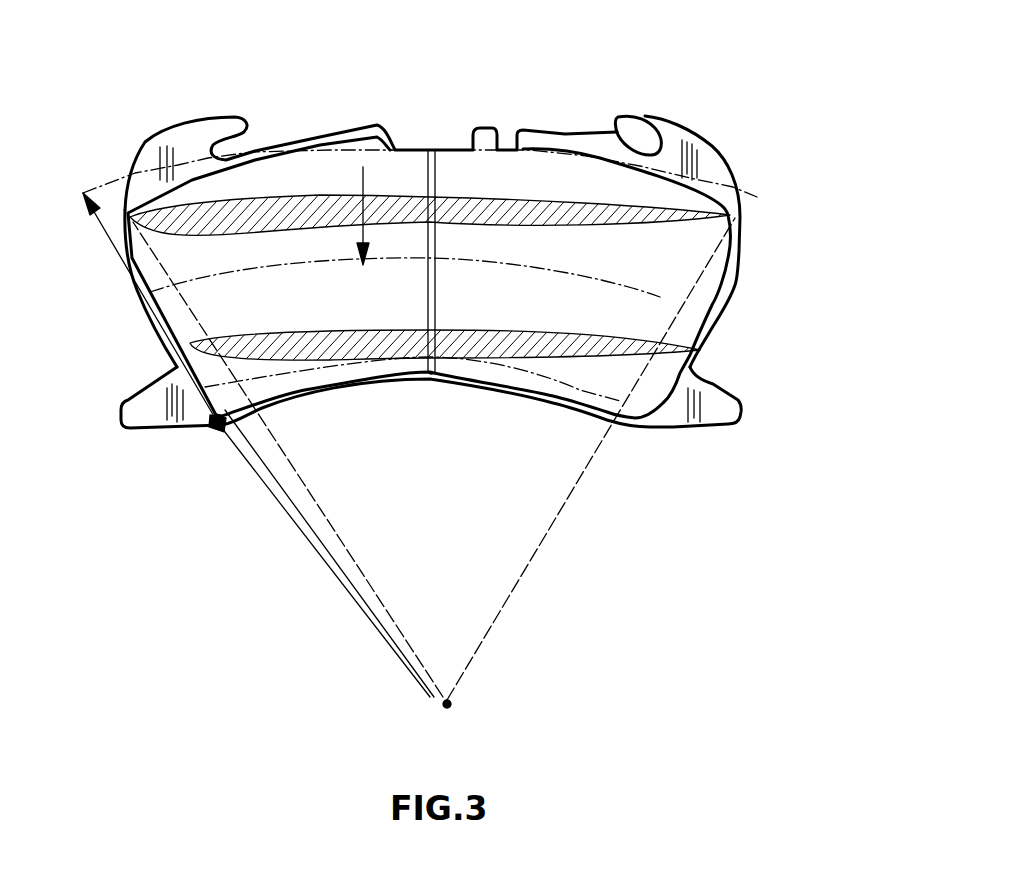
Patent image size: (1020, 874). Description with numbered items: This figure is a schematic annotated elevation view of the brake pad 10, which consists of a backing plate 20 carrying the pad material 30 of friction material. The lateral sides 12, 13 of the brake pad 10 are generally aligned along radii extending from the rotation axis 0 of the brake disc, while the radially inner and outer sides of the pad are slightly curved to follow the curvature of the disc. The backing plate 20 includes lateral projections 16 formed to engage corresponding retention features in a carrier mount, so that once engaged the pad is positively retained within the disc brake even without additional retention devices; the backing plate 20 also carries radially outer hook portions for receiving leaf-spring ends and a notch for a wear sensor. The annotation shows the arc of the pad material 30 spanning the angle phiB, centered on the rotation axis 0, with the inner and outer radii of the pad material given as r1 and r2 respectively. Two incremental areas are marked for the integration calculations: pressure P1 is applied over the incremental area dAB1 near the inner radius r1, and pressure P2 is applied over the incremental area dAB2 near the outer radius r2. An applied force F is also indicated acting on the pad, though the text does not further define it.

The brake pad 10 is at (696, 56).
The lateral side 12 is at (131, 285).
The lateral side 13 is at (728, 283).
The lateral projection 16 is at (723, 413).
The backing plate 20 is at (713, 151).
The pad material 30 is at (704, 305).
The incremental area dAB2 is at (683, 217).
The incremental area dAB1 is at (653, 337).
The pressure P2 is at (257, 208).
The pressure P1 is at (283, 343).
The applied force F is at (363, 183).
The outer radius r2 is at (250, 472).
The inner radius r1 is at (297, 508).
The angle spanned by the arc of the pad material phiB is at (434, 459).
The rotation axis 0 is at (460, 704).